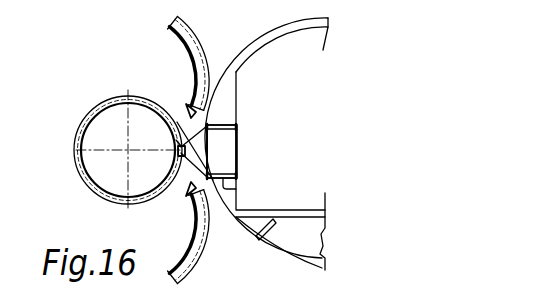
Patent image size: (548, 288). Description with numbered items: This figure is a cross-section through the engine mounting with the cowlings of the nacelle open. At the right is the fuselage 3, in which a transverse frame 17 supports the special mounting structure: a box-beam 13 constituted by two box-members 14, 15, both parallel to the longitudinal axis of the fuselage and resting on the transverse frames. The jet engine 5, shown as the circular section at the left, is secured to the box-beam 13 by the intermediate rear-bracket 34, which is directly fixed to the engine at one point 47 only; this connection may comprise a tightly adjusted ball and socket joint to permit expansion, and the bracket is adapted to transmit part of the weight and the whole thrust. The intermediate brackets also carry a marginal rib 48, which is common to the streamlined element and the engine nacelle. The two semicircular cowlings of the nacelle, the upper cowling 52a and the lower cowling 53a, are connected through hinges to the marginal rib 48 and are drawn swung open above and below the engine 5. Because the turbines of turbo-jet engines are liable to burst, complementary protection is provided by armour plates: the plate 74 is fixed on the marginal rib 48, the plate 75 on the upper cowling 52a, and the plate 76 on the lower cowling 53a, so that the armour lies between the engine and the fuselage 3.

The fuselage 3 is at (281, 16).
The transverse frame 17 is at (278, 38).
The jet engine 5 is at (112, 97).
The marginal rib 48 is at (178, 140).
The fixing point 47 is at (179, 154).
The upper cowling 52a is at (197, 44).
The lower cowling 53a is at (199, 257).
The box-beam 13 is at (238, 150).
The box-member 15 is at (215, 125).
The box-member 14 is at (238, 187).
The rear-bracket 34 is at (190, 150).
The armour plate 74 is at (183, 173).
The armour plate 75 is at (192, 116).
The armour plate 76 is at (197, 200).